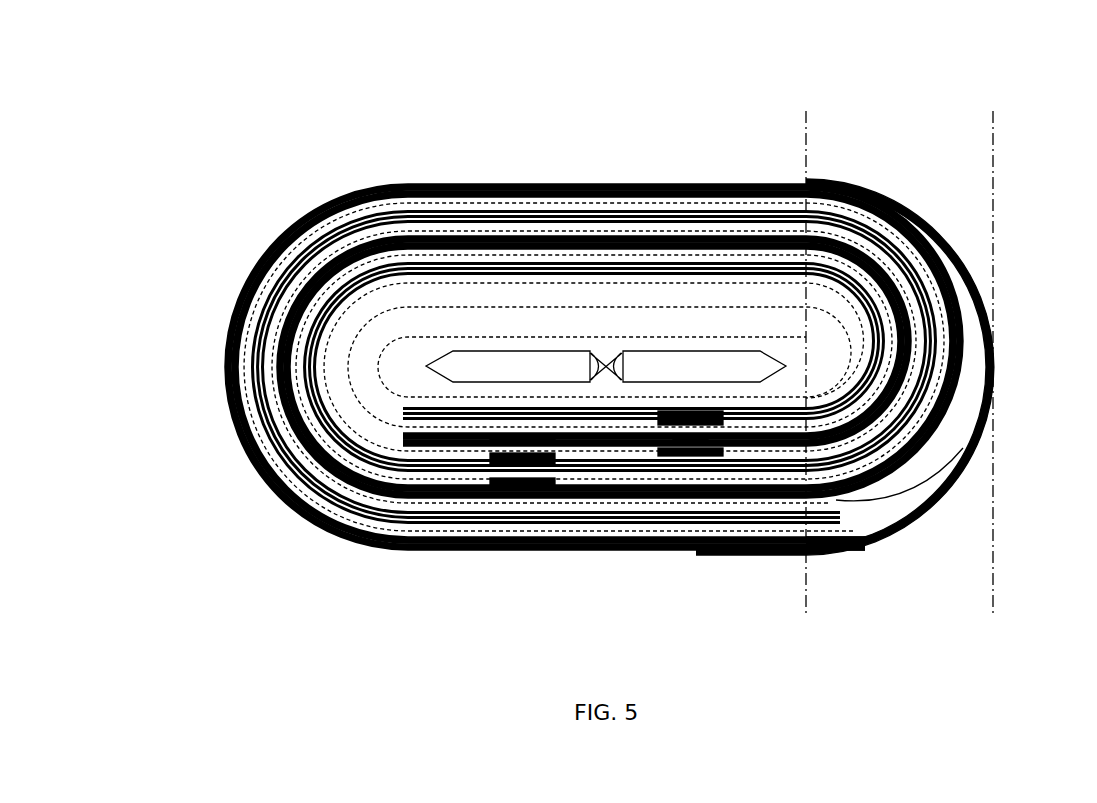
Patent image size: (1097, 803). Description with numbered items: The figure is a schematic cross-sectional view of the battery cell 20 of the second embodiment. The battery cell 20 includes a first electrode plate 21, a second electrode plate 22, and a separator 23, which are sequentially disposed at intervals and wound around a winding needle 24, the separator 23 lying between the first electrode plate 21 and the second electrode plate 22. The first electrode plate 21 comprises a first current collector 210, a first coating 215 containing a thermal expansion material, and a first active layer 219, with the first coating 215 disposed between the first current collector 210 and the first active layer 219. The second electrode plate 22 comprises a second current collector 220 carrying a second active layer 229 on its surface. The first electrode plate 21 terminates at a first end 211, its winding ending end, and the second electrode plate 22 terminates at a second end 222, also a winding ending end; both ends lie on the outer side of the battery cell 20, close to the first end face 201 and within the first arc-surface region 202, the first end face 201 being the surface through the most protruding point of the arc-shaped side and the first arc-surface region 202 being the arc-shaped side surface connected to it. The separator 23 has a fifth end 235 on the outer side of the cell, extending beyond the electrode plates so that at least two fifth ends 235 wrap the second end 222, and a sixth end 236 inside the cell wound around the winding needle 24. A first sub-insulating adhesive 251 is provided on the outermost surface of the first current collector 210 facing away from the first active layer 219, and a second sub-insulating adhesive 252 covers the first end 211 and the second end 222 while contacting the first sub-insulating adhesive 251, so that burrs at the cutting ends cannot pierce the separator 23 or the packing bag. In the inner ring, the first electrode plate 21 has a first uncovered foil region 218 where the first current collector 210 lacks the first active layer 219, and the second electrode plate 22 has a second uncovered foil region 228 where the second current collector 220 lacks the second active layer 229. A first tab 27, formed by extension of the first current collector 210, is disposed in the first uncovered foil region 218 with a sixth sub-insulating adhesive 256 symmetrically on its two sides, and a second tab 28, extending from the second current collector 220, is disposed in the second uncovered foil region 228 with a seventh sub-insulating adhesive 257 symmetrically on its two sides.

The battery cell 20 is at (489, 86).
The first arc-surface region 202 is at (905, 106).
The first end face 201 is at (990, 362).
The first sub-insulating adhesive 251 is at (973, 292).
The second sub-insulating adhesive 252 is at (985, 333).
The fifth end 235 is at (905, 505).
The second electrode plate 22 is at (253, 183).
The second current collector 220 is at (331, 193).
The second active layer 229 is at (289, 220).
The first end 211 is at (808, 525).
The first electrode plate 21 is at (170, 310).
The first active layer 219 is at (262, 331).
The first coating 215 is at (270, 343).
The first current collector 210 is at (265, 354).
The second end 222 is at (838, 503).
The separator 23 is at (300, 405).
The winding needle 24 is at (503, 352).
The sixth end 236 is at (598, 378).
The first tab 27 is at (481, 470).
The sixth sub-insulating adhesive 256 is at (508, 458).
The second uncovered foil region 228 is at (548, 460).
The second tab 28 is at (675, 436).
The seventh sub-insulating adhesive 257 is at (688, 449).
The first uncovered foil region 218 is at (713, 419).